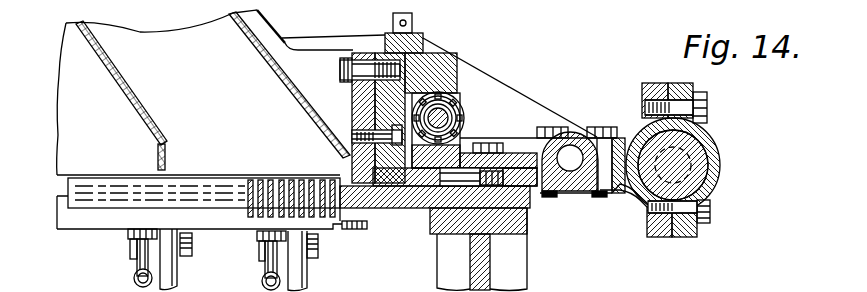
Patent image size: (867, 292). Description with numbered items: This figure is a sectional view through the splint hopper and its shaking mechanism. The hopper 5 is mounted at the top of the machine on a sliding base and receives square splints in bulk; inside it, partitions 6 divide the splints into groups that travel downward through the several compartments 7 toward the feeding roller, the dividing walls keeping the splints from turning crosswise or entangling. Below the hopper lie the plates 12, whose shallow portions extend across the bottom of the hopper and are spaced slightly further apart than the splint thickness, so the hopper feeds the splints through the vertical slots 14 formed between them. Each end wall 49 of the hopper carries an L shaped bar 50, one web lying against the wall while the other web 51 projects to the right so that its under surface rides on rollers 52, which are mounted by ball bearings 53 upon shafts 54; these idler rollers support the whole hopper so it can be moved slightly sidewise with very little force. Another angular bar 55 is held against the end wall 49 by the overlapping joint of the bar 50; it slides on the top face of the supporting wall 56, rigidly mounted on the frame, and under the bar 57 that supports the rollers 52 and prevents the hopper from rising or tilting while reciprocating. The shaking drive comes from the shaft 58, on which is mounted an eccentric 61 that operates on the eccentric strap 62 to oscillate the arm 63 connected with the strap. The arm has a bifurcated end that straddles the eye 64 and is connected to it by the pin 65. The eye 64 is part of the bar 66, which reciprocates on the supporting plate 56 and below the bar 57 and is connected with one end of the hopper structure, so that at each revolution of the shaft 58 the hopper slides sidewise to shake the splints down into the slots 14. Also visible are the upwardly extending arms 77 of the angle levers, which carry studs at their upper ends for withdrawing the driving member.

The hopper 5 is at (143, 32).
The compartments 7 is at (197, 35).
The partitions 6 is at (147, 112).
The plates 12 is at (247, 186).
The vertical slots 14 is at (282, 181).
The end walls 49 is at (350, 101).
The L shaped bar 50 is at (385, 63).
The web 51 is at (460, 68).
The rollers 52 is at (460, 104).
The ball bearings 53 is at (458, 123).
The shafts 54 is at (445, 117).
The angular bar 55 is at (376, 209).
The supporting wall 56 is at (530, 206).
The bar 57 is at (443, 161).
The shaft 58 is at (682, 162).
The eccentric 61 is at (699, 132).
The eccentric strap 62 is at (704, 182).
The arm 63 is at (622, 178).
The eye 64 is at (575, 137).
The pin 65 is at (570, 165).
The bar 66 is at (181, 273).
The upwardly extending arms 77 is at (305, 284).